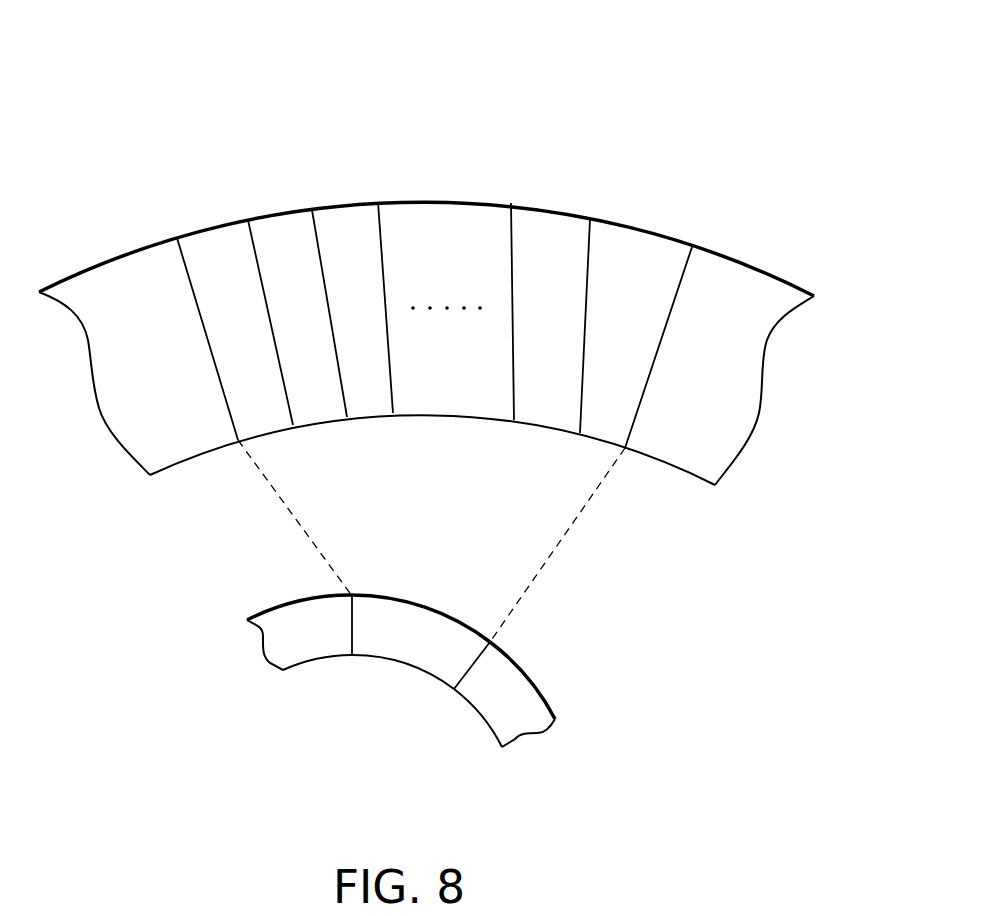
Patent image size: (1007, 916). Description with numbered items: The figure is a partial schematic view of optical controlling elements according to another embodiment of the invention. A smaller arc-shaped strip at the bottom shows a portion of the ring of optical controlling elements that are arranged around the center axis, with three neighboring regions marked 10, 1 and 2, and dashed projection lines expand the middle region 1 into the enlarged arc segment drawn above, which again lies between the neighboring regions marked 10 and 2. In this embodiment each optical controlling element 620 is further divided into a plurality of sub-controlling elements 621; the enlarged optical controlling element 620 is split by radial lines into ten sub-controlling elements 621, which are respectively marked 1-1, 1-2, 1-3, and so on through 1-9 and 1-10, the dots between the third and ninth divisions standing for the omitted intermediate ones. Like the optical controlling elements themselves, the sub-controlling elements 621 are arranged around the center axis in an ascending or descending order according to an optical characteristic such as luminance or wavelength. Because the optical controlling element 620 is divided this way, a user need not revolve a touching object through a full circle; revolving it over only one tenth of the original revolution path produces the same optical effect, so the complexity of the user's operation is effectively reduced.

The optical controlling element 620 is at (654, 116).
The sub-controlling element 621 is at (542, 222).
The region 10 is at (195, 454).
The region 2 is at (634, 497).
The region 1 is at (431, 564).
The first sub-controlling element marking 1-1 is at (253, 322).
The second sub-controlling element marking 1-2 is at (311, 313).
The third sub-controlling element marking 1-3 is at (363, 307).
The ninth sub-controlling element marking 1-9 is at (546, 313).
The tenth sub-controlling element marking 1-10 is at (619, 320).